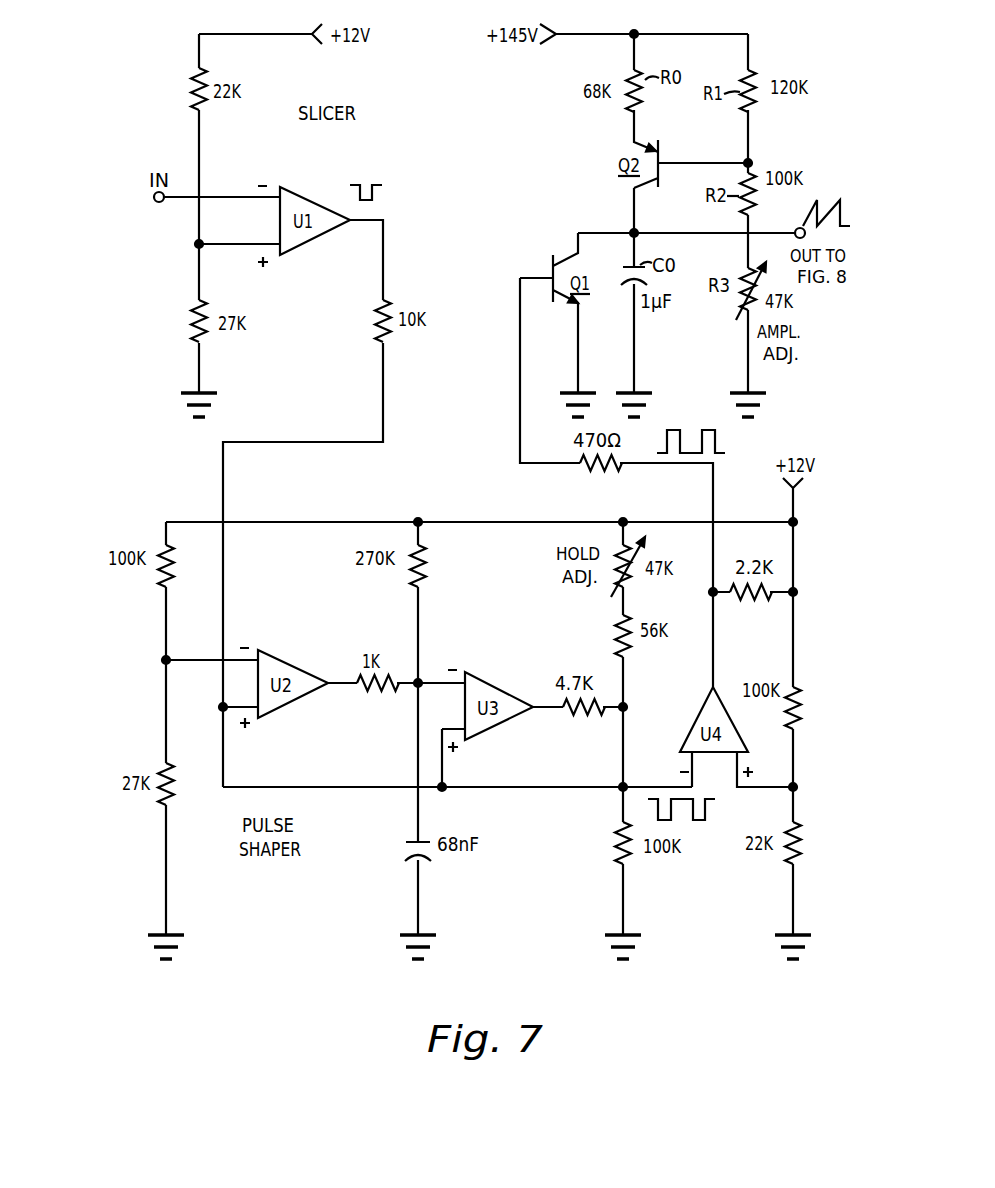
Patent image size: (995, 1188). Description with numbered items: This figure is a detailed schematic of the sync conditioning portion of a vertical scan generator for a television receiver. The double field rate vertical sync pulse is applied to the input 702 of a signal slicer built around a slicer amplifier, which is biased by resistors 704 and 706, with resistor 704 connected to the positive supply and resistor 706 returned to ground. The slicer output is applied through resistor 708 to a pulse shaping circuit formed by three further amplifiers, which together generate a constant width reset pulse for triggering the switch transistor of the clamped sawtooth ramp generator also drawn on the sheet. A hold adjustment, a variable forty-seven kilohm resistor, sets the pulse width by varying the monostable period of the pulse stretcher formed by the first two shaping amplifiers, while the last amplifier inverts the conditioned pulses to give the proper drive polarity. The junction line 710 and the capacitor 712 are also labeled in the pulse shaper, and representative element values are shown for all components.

The input 702 is at (159, 203).
The resistor 704 is at (190, 91).
The resistor 706 is at (190, 321).
The resistor 708 is at (378, 315).
The junction line 710 is at (545, 786).
The 68nF capacitor 712 is at (422, 866).